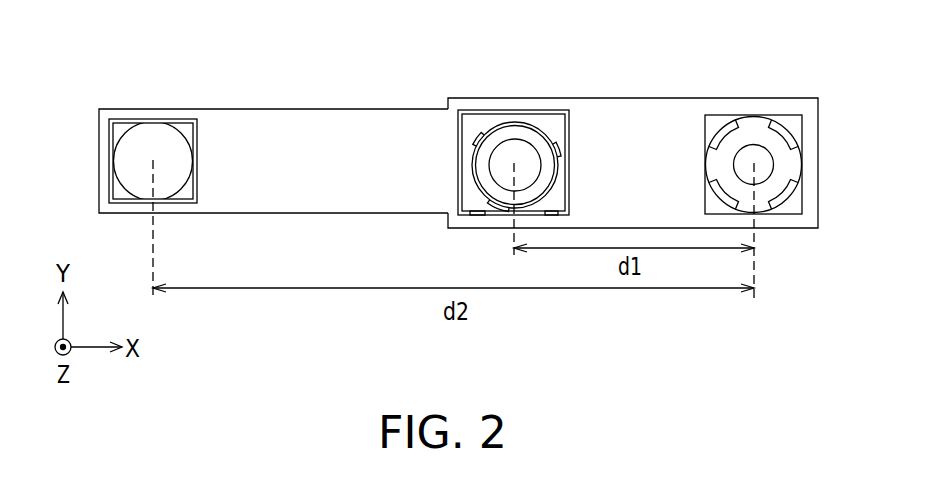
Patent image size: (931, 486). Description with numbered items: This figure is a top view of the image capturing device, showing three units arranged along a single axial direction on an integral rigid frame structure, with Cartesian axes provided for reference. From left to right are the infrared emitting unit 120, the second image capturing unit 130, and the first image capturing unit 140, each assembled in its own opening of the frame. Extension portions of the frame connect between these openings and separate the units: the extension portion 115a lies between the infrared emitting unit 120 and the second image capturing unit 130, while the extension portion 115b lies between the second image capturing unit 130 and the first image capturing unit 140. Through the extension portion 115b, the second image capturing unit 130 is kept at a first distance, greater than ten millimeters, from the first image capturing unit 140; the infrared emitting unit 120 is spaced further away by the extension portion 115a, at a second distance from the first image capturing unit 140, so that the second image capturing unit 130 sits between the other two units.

The extension portion 115a is at (287, 122).
The extension portion 115b is at (635, 113).
The infrared emitting unit 120 is at (158, 153).
The second image capturing unit 130 is at (516, 127).
The first image capturing unit 140 is at (755, 133).